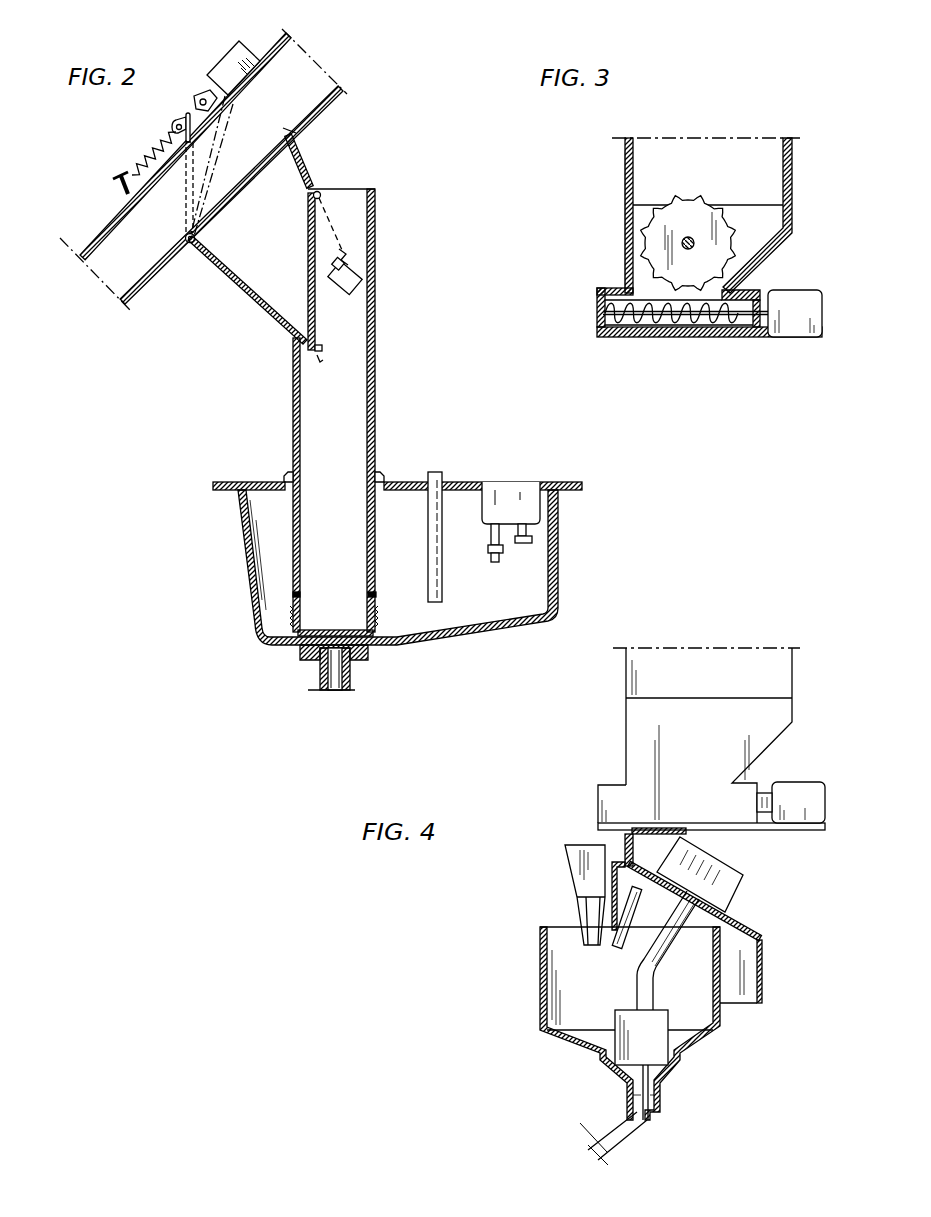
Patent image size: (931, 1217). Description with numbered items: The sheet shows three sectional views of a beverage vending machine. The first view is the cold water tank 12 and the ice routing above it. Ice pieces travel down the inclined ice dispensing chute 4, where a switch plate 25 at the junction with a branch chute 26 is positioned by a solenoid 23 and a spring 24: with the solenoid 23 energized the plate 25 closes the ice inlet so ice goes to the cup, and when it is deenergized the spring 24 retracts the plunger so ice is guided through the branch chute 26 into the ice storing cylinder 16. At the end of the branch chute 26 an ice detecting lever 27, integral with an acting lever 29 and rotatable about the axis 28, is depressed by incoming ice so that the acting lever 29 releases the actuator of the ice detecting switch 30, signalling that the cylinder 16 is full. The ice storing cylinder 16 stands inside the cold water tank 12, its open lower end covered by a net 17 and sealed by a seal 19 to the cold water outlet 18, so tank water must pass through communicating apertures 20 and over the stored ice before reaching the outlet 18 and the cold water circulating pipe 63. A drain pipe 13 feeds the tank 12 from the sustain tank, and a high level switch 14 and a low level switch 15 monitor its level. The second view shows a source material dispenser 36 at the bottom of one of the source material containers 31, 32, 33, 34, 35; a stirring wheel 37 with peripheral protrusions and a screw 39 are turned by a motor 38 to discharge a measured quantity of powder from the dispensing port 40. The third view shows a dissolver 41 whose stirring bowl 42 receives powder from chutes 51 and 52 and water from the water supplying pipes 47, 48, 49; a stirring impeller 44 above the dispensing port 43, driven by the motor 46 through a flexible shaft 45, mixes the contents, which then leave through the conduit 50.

In FIG. 2, the ice dispensing chute 4 is at (312, 126).
In FIG. 2, the solenoid 23 is at (234, 57).
In FIG. 2, the spring 24 is at (152, 153).
In FIG. 2, the switch plate 25 is at (262, 177).
In FIG. 2, the branch chute 26 is at (235, 276).
In FIG. 2, the ice detecting lever 27 is at (307, 308).
In FIG. 2, the axis 28 is at (320, 193).
In FIG. 2, the acting lever 29 is at (345, 244).
In FIG. 2, the ice detecting switch 30 is at (360, 284).
In FIG. 2, the ice storing cylinder 16 is at (376, 422).
In FIG. 2, the drain pipe 13 is at (438, 508).
In FIG. 2, the high level switch 14 is at (532, 540).
In FIG. 2, the low level switch 15 is at (503, 549).
In FIG. 2, the communicating aperture 20 is at (294, 597).
In FIG. 2, the cold water tank 12 is at (497, 620).
In FIG. 2, the seal 19 is at (305, 652).
In FIG. 2, the net 17 is at (348, 640).
In FIG. 2, the cold water outlet 18 is at (325, 668).
In FIG. 2, the cold water circulating pipe 63 is at (348, 688).
In FIG. 3, the source material container 31 is at (753, 215).
In FIG. 4, the source material container 31 is at (758, 734).
In FIG. 3, the source material container 32 is at (753, 215).
In FIG. 4, the source material container 32 is at (783, 670).
In FIG. 3, the source material container 33 is at (753, 215).
In FIG. 3, the source material container 34 is at (753, 215).
In FIG. 3, the source material container 35 is at (790, 170).
In FIG. 3, the source material dispenser 36 is at (625, 244).
In FIG. 3, the stirring wheel 37 is at (728, 234).
In FIG. 3, the motor 38 is at (820, 306).
In FIG. 4, the motor 38 is at (828, 803).
In FIG. 3, the screw 39 is at (716, 330).
In FIG. 3, the dispensing port 40 is at (597, 313).
In FIG. 4, the dispensing port 40 is at (598, 803).
In FIG. 4, the dissolver 41 is at (608, 1023).
In FIG. 4, the stirring bowl 42 is at (538, 969).
In FIG. 4, the dispensing port 43 is at (654, 1094).
In FIG. 4, the stirring impeller 44 is at (664, 1040).
In FIG. 4, the flexible shaft 45 is at (665, 947).
In FIG. 4, the motor 46 is at (717, 880).
In FIG. 4, the water supplying pipe 47 is at (548, 912).
In FIG. 4, the water supplying pipe 48 is at (548, 912).
In FIG. 4, the water supplying pipe 49 is at (627, 910).
In FIG. 4, the conduit 50 is at (603, 1133).
In FIG. 4, the chute 51 is at (561, 880).
In FIG. 4, the common chute 52 is at (573, 863).